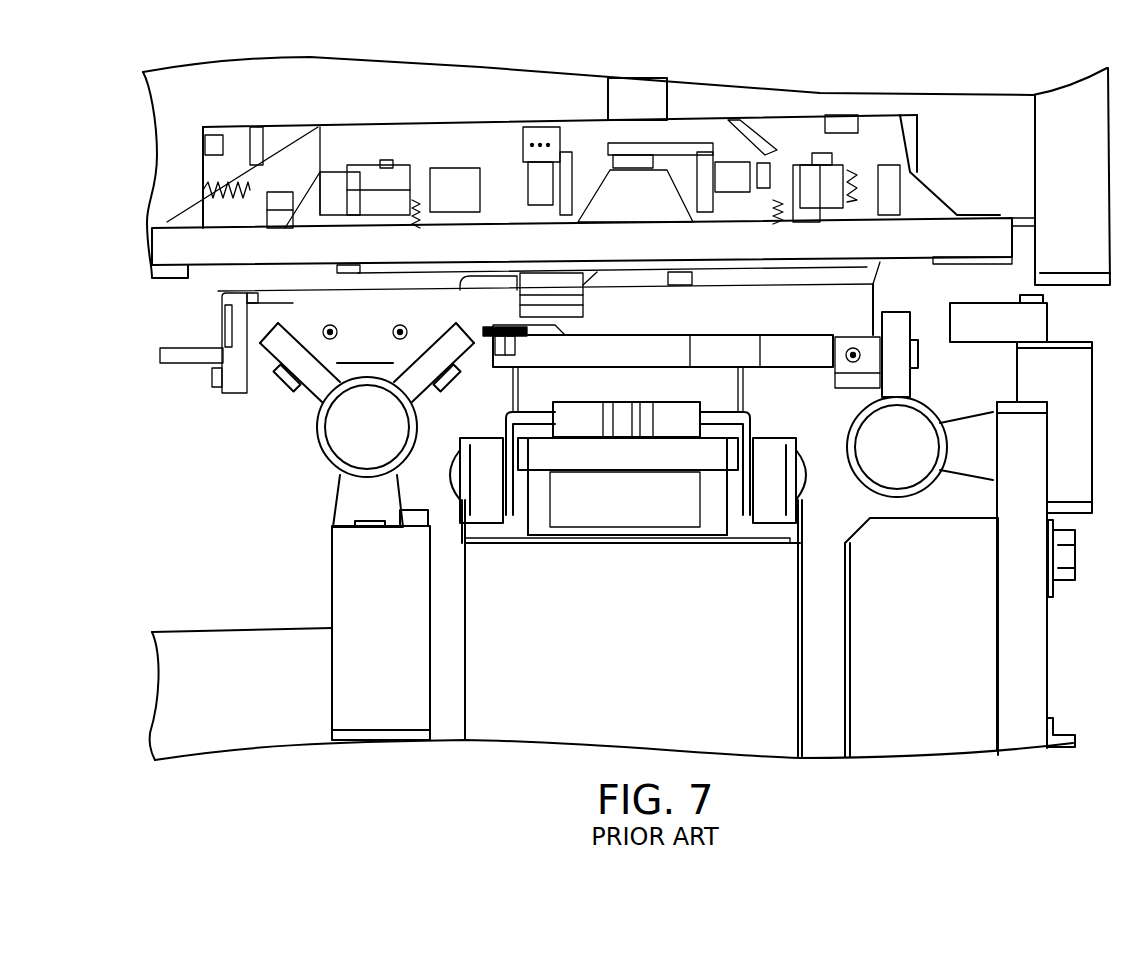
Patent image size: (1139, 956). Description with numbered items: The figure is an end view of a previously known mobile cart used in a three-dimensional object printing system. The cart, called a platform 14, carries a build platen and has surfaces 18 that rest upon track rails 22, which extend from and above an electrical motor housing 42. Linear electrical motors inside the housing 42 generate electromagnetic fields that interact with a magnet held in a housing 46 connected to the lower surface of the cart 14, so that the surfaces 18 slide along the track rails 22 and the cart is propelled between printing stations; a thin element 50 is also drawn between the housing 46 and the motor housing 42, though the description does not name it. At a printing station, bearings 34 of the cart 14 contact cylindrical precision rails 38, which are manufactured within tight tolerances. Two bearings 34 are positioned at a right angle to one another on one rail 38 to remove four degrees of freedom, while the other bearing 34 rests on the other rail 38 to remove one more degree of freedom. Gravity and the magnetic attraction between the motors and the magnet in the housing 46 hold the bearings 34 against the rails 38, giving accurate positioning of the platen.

The platform 14 is at (872, 282).
The surfaces 18 is at (523, 412).
The track rails 22 is at (460, 510).
The bearings 34 is at (300, 345).
The precision rails 38 is at (320, 450).
The housing 42 is at (570, 700).
The housing 46 is at (613, 500).
The plate 50 is at (623, 548).